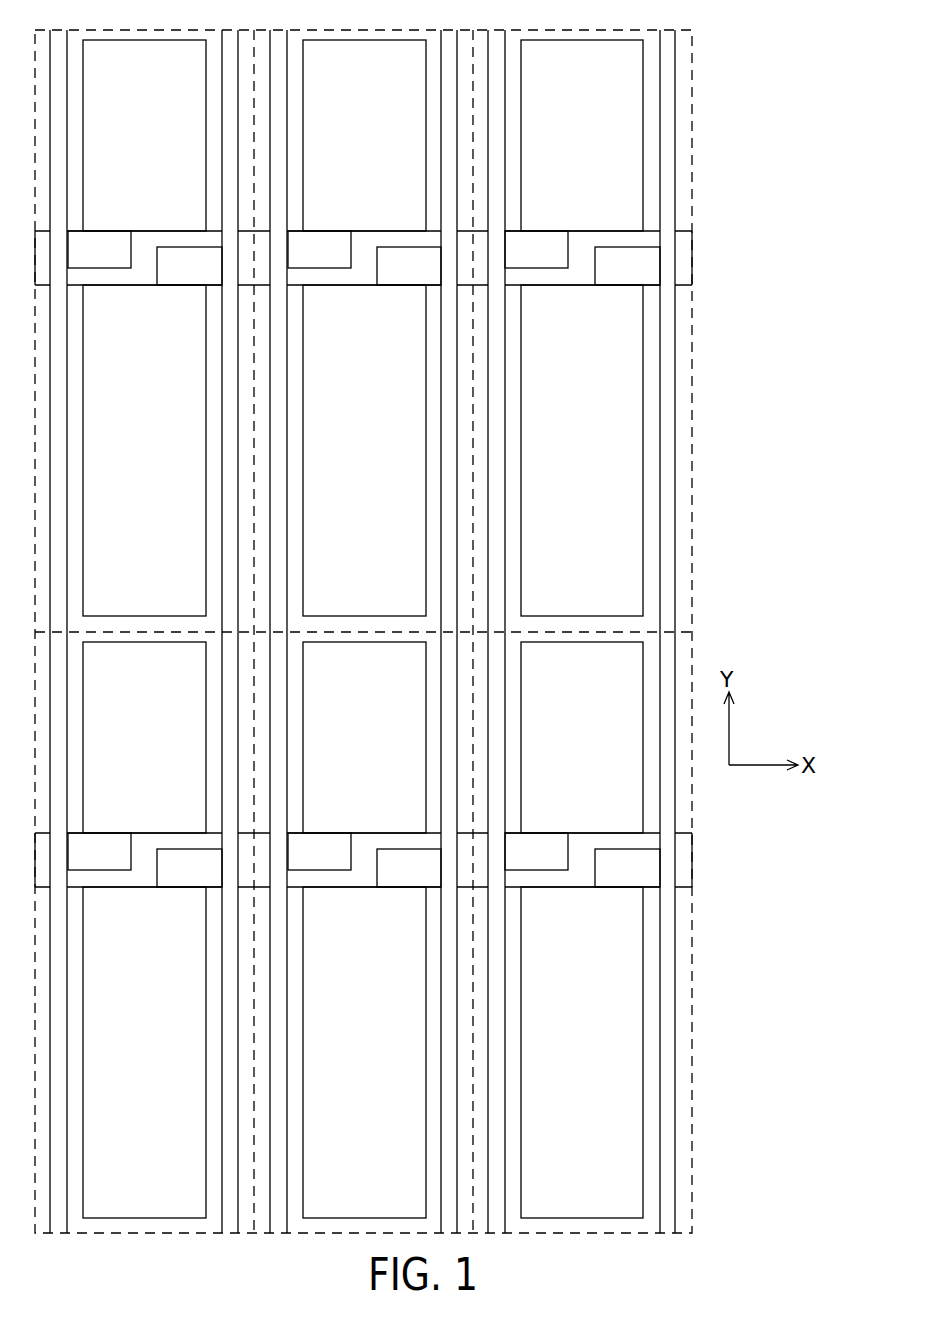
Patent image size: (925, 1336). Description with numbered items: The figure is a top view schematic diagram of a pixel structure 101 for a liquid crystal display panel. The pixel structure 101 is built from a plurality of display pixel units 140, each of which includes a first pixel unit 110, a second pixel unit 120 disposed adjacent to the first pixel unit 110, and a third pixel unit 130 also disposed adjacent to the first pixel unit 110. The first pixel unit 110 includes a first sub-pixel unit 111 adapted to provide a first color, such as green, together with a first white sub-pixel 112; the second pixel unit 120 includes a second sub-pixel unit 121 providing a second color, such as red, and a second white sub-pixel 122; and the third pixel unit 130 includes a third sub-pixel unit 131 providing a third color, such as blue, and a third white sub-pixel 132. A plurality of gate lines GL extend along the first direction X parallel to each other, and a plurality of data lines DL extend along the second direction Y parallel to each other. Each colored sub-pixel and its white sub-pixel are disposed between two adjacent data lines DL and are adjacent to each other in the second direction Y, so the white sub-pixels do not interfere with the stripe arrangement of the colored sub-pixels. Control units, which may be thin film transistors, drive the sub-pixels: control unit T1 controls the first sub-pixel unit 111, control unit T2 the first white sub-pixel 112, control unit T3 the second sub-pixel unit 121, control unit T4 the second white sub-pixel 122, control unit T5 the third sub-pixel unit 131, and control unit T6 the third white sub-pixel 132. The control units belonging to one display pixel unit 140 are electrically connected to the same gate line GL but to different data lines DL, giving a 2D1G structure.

The pixel structure 101 is at (731, 64).
The first pixel unit 110 is at (525, 629).
The first sub-pixel unit 111 is at (343, 446).
The first white sub-pixel 112 is at (343, 141).
The second pixel unit 120 is at (415, 629).
The second sub-pixel unit 121 is at (123, 446).
The second white sub-pixel 122 is at (123, 141).
The third pixel unit 130 is at (633, 629).
The third sub-pixel unit 131 is at (561, 446).
The third white sub-pixel 132 is at (561, 141).
The display pixel unit 140 is at (449, 629).
The gate line GL is at (687, 258).
The data line DL is at (63, 32).
The control unit T1 is at (409, 567).
The control unit T2 is at (319, 550).
The control unit T3 is at (189, 567).
The control unit T4 is at (99, 550).
The control unit T5 is at (627, 567).
The control unit T6 is at (536, 550).